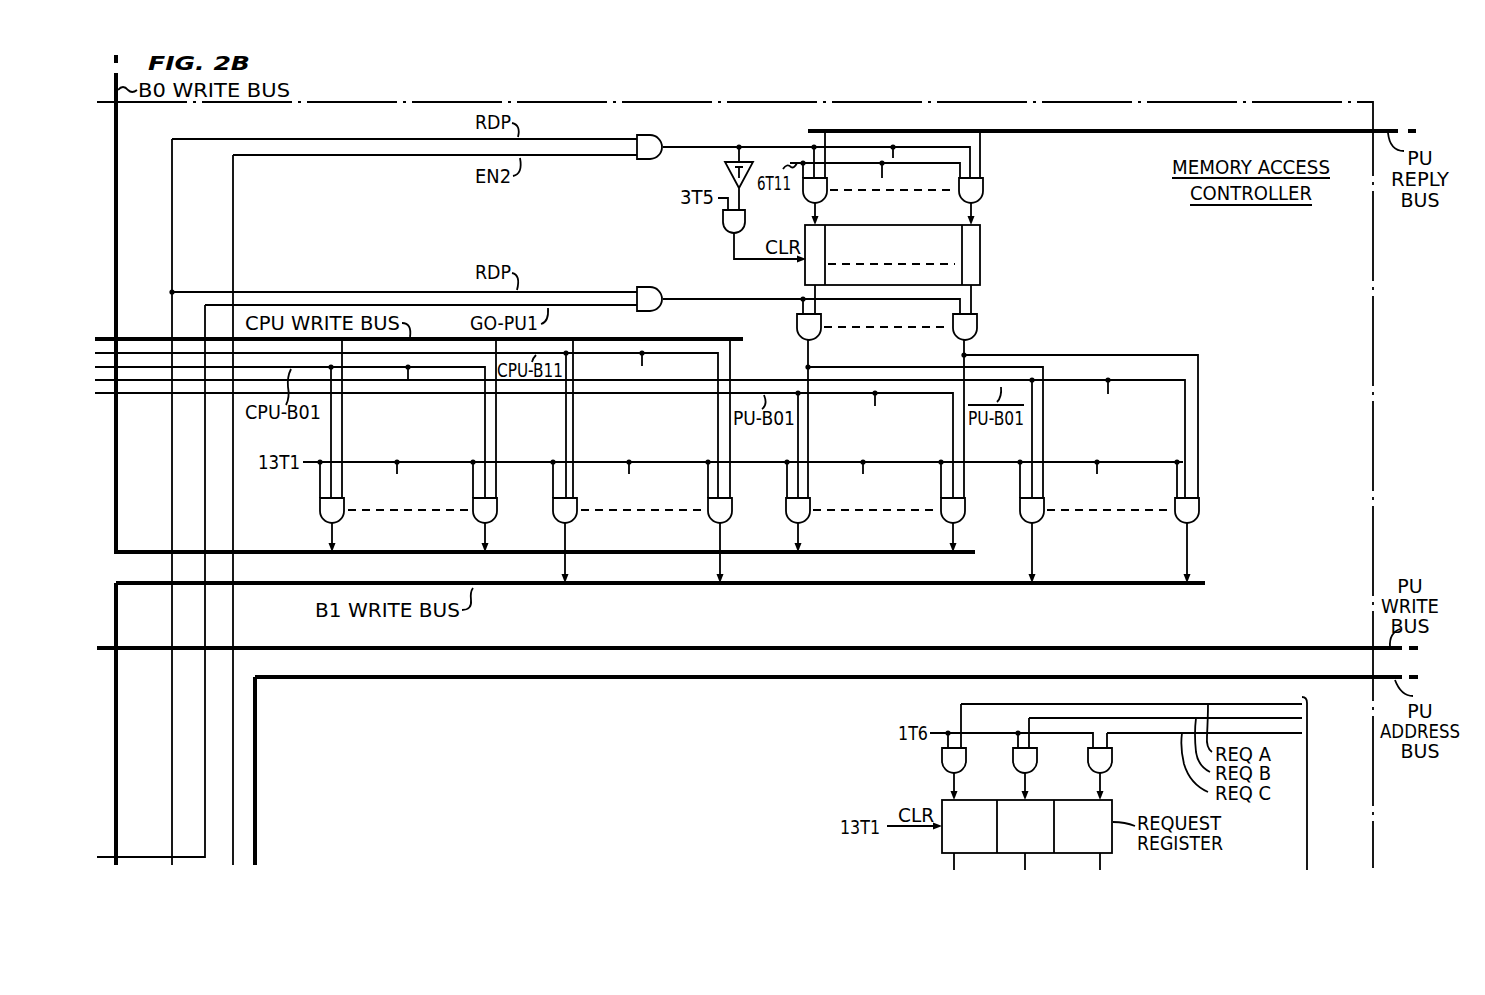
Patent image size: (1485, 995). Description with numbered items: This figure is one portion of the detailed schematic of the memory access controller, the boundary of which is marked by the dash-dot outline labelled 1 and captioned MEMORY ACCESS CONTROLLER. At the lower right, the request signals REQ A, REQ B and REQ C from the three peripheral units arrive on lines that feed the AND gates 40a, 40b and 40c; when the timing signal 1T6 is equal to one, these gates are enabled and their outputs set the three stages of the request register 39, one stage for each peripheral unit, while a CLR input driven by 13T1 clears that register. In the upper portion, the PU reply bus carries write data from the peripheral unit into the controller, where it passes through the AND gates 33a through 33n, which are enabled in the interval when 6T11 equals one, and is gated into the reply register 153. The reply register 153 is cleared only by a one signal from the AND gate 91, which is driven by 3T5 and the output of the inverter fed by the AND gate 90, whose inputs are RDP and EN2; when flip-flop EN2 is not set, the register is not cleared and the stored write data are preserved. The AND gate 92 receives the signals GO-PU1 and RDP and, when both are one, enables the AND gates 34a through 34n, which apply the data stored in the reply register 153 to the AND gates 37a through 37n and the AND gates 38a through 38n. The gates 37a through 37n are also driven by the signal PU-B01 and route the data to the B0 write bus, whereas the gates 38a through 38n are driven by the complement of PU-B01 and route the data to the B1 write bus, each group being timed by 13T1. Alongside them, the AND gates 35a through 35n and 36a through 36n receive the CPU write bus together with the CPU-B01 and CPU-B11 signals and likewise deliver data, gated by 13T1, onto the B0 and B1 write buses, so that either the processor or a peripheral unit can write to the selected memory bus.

The memory access controller 1 is at (810, 102).
The AND gate 90 is at (651, 160).
The AND gate 91 is at (722, 222).
The AND gate 92 is at (662, 308).
The AND gate 33a is at (825, 201).
The AND gate 33n is at (981, 201).
The reply register 153 is at (985, 262).
The AND gate 34a is at (818, 338).
The AND gate 34n is at (975, 338).
The AND gate 35a is at (342, 521).
The AND gate 35n is at (495, 521).
The AND gate 36a is at (575, 521).
The AND gate 36n is at (730, 521).
The AND gate 37a is at (808, 521).
The AND gate 37n is at (963, 521).
The AND gate 38a is at (1042, 521).
The AND gate 38n is at (1197, 521).
The request register 39 is at (940, 843).
The AND gate 40a is at (960, 758).
The AND gate 40b is at (1031, 758).
The AND gate 40c is at (1106, 758).